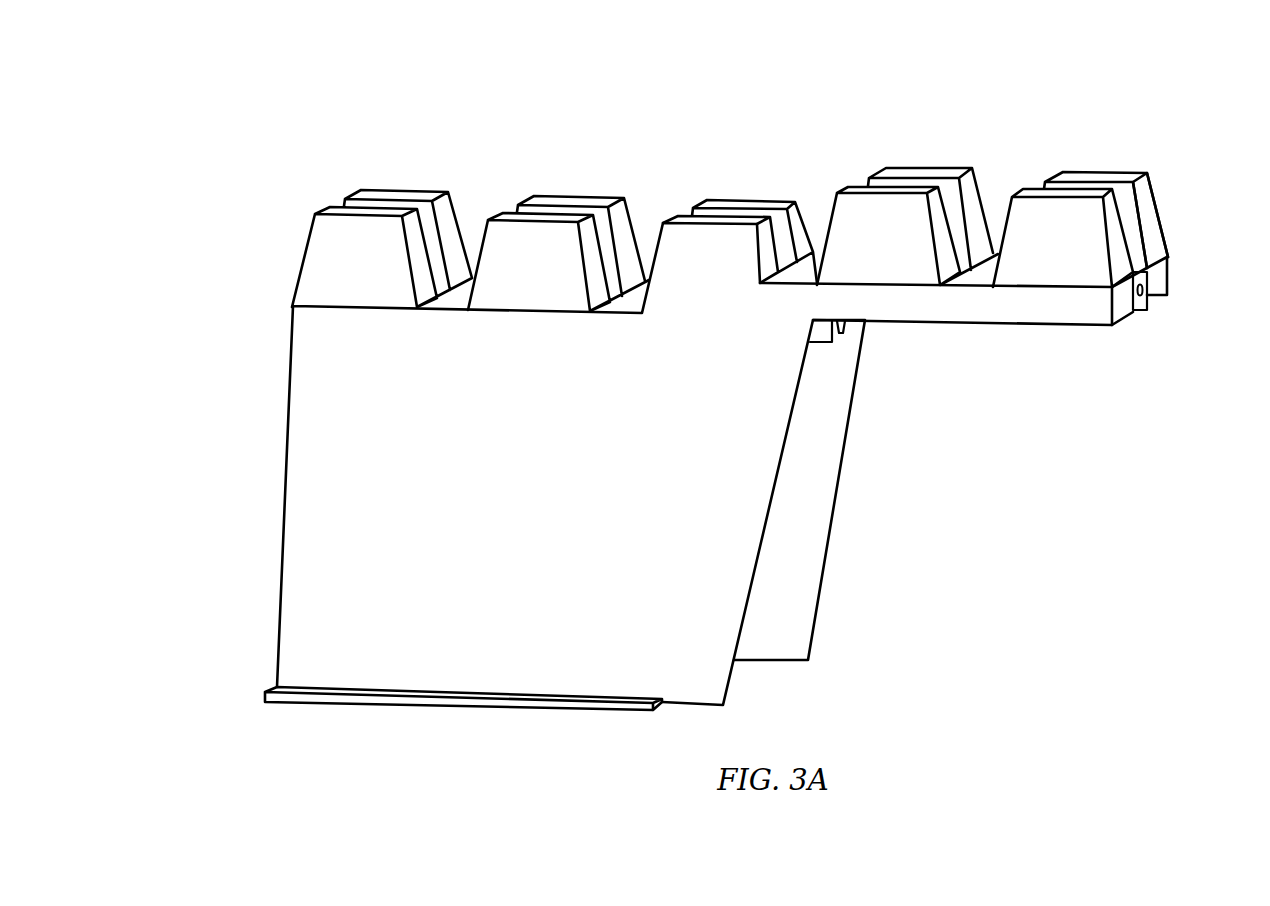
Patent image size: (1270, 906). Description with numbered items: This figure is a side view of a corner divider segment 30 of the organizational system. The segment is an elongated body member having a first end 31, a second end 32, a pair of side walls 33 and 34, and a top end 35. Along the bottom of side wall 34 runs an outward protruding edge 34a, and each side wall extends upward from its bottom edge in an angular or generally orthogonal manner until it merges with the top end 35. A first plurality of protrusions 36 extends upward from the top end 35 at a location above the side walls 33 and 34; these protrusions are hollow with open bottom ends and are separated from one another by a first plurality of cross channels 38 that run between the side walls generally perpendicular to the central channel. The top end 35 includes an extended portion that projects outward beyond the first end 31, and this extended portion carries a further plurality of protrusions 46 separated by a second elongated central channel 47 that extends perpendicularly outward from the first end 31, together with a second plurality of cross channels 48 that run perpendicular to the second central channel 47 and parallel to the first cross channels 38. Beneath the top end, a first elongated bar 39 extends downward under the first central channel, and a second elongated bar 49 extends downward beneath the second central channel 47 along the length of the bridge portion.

The corner divider segment 30 is at (700, 411).
The first end 31 is at (866, 504).
The second end 32 is at (260, 460).
The side wall 33 is at (822, 592).
The side wall 34 is at (525, 610).
The outward protruding edge 34a is at (420, 702).
The top end 35 is at (650, 183).
The first plurality of protrusions 36 is at (503, 210).
The first plurality of cross channels 38 is at (456, 304).
The first elongated bar 39 is at (835, 343).
The protrusions 46 is at (1013, 197).
The second elongated central channel 47 is at (1151, 248).
The second plurality of cross channels 48 is at (788, 297).
The second elongated bar 49 is at (1135, 310).